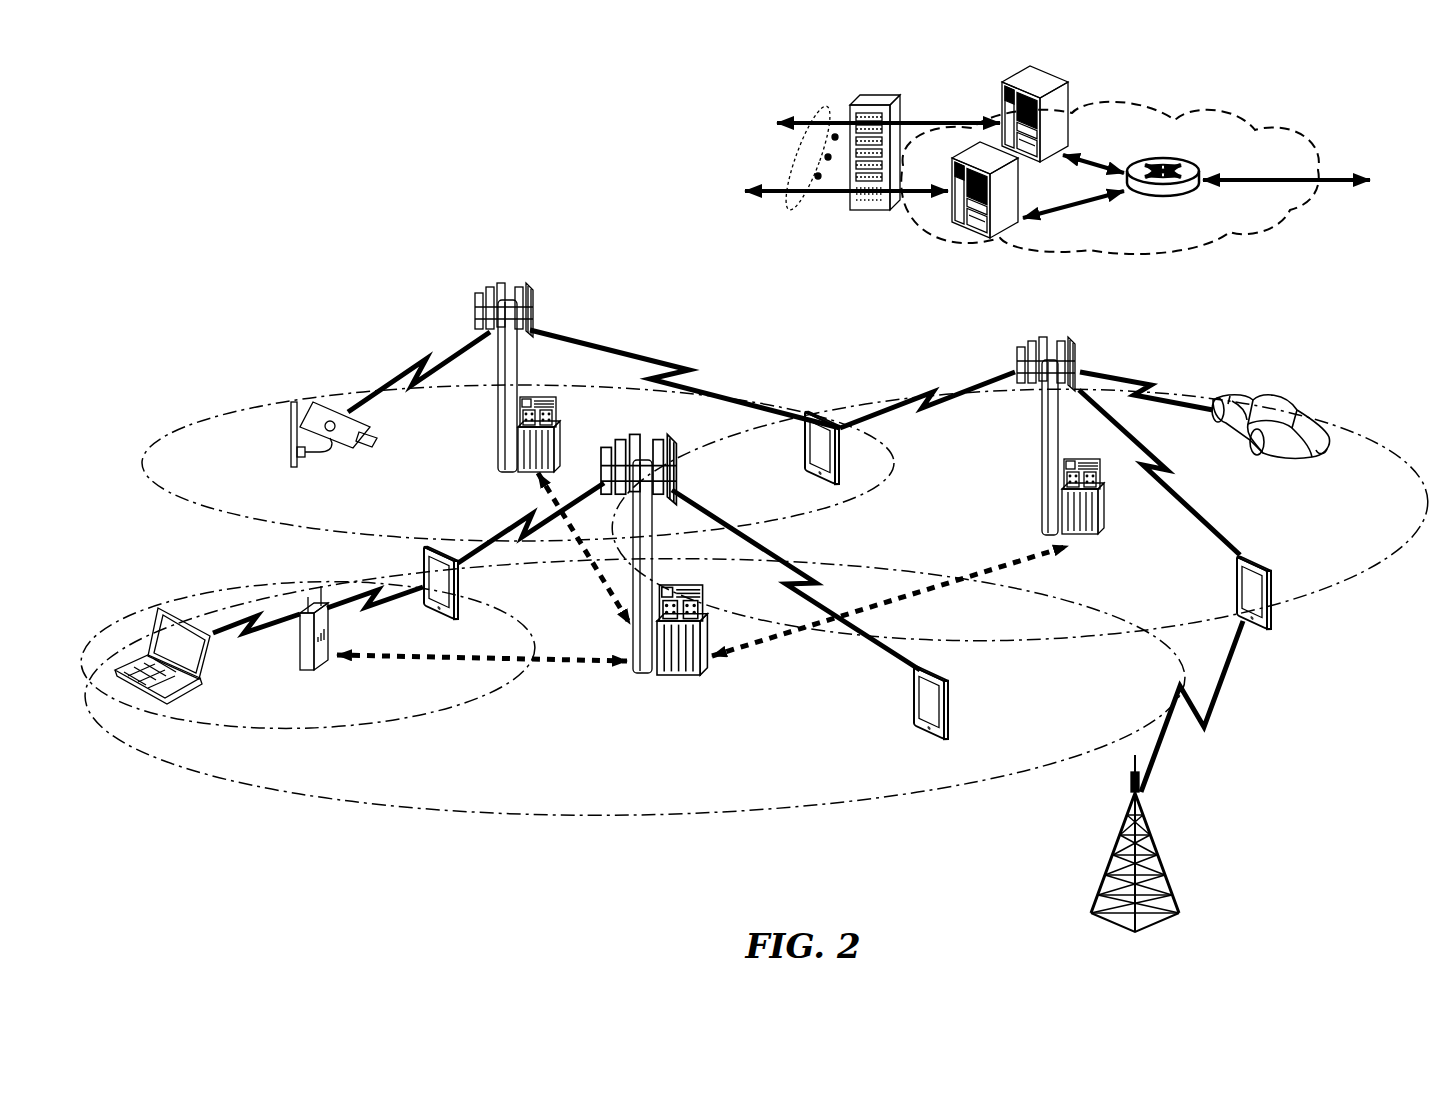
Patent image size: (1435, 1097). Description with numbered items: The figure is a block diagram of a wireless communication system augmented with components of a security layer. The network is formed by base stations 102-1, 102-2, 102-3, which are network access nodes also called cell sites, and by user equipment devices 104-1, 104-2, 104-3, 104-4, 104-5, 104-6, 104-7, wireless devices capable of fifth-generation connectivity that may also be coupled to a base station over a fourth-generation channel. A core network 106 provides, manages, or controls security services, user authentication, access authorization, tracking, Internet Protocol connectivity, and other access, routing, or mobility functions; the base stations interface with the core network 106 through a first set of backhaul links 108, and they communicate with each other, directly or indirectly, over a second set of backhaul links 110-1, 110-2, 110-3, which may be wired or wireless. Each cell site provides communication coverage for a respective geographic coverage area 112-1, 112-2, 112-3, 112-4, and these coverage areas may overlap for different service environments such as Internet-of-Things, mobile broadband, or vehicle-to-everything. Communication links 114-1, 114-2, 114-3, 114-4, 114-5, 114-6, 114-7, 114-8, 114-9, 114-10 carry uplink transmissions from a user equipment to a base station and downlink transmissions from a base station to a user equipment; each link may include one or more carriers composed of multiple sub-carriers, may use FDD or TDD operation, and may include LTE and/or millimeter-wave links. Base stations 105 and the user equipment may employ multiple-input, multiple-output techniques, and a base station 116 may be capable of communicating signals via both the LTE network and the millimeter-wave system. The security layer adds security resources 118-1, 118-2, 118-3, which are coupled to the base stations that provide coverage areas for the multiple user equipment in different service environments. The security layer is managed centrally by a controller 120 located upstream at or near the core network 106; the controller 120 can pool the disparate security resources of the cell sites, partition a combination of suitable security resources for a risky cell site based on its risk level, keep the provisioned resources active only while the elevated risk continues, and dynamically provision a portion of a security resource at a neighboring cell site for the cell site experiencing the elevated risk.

The base station 102-1 is at (640, 678).
The base station 102-2 is at (498, 436).
The base station 102-3 is at (1042, 465).
The UE 104-1 is at (952, 705).
The UE 104-2 is at (460, 590).
The UE 104-3 is at (142, 702).
The UE 104-4 is at (325, 466).
The UE 104-5 is at (802, 465).
The UE 104-6 is at (1275, 572).
The UE 104-7 is at (1295, 403).
The base station 105 is at (297, 663).
The core network 106 is at (1200, 248).
The first set of backhaul links 108 is at (792, 212).
The second set of backhaul links 110-1 is at (372, 660).
The second set of backhaul links 110-2 is at (960, 580).
The second set of backhaul links 110-3 is at (600, 578).
The coverage area 112-1 is at (570, 808).
The coverage area 112-2 is at (440, 718).
The coverage area 112-3 is at (207, 528).
The coverage area 112-4 is at (1360, 462).
The communication link 114-1 is at (808, 584).
The communication link 114-2 is at (525, 527).
The communication link 114-3 is at (248, 633).
The communication link 114-4 is at (372, 600).
The communication link 114-5 is at (418, 368).
The communication link 114-6 is at (670, 370).
The communication link 114-7 is at (922, 392).
The communication link 114-8 is at (1170, 470).
The communication link 114-9 is at (1140, 378).
The communication link 114-10 is at (1213, 707).
The base station 116 is at (1150, 818).
The security resource 118-1 is at (560, 422).
The security resource 118-2 is at (700, 588).
The security resource 118-3 is at (1105, 480).
The controller 120 is at (892, 103).